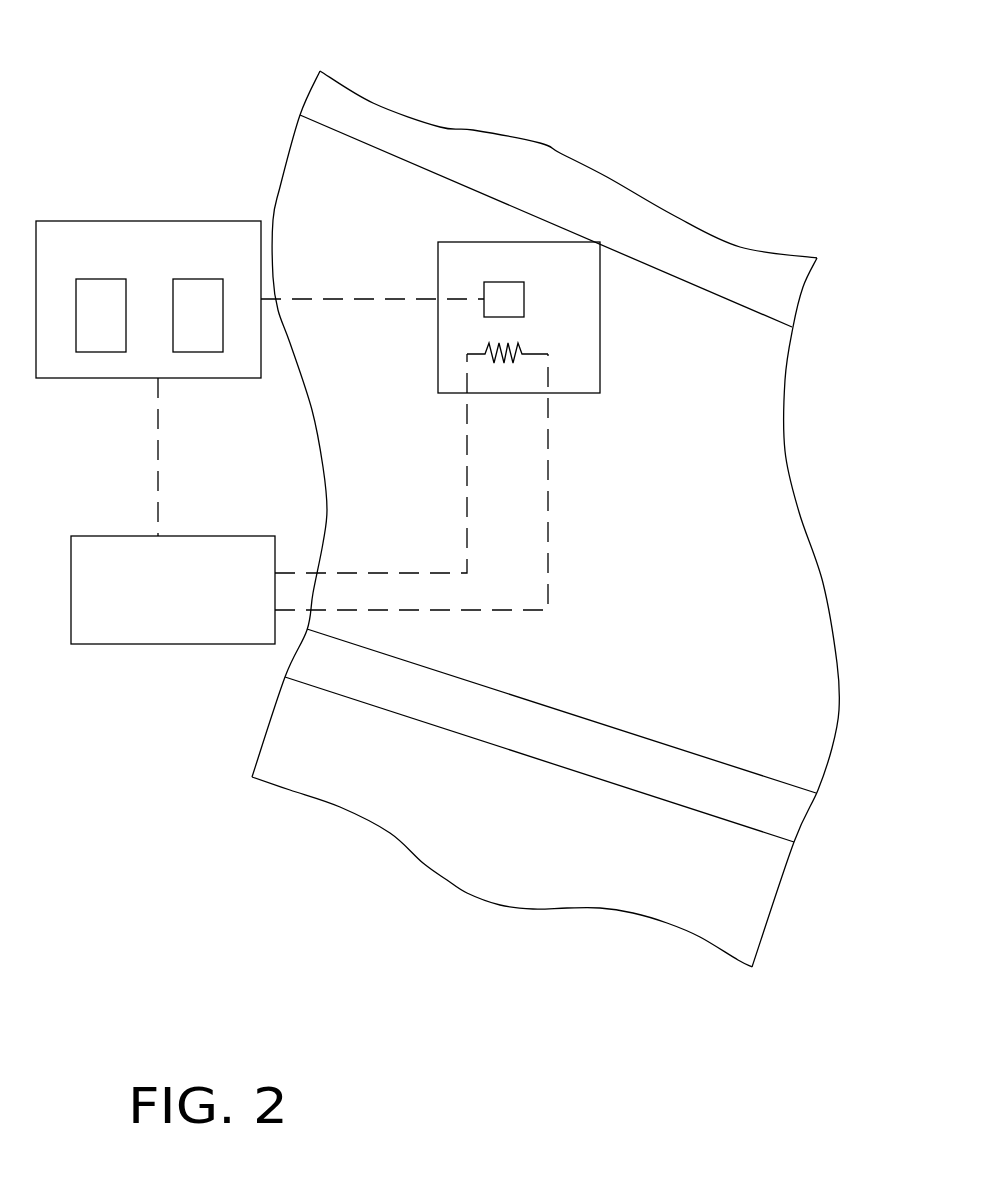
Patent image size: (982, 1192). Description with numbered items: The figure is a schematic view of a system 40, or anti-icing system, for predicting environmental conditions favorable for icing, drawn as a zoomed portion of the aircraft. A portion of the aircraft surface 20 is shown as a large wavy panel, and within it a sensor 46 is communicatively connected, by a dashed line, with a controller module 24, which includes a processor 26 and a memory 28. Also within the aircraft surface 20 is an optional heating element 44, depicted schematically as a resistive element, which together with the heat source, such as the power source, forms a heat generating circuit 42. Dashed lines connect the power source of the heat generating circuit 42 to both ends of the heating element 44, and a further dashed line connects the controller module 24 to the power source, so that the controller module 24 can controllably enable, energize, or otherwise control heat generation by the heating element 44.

The system 40 is at (608, 43).
The aircraft surface 20 is at (588, 323).
The sensor 46 is at (520, 312).
The heating element 44 is at (518, 383).
The heat generating circuit 42 is at (182, 632).
The controller module 24 is at (167, 328).
The processor 26 is at (118, 328).
The memory 28 is at (213, 328).